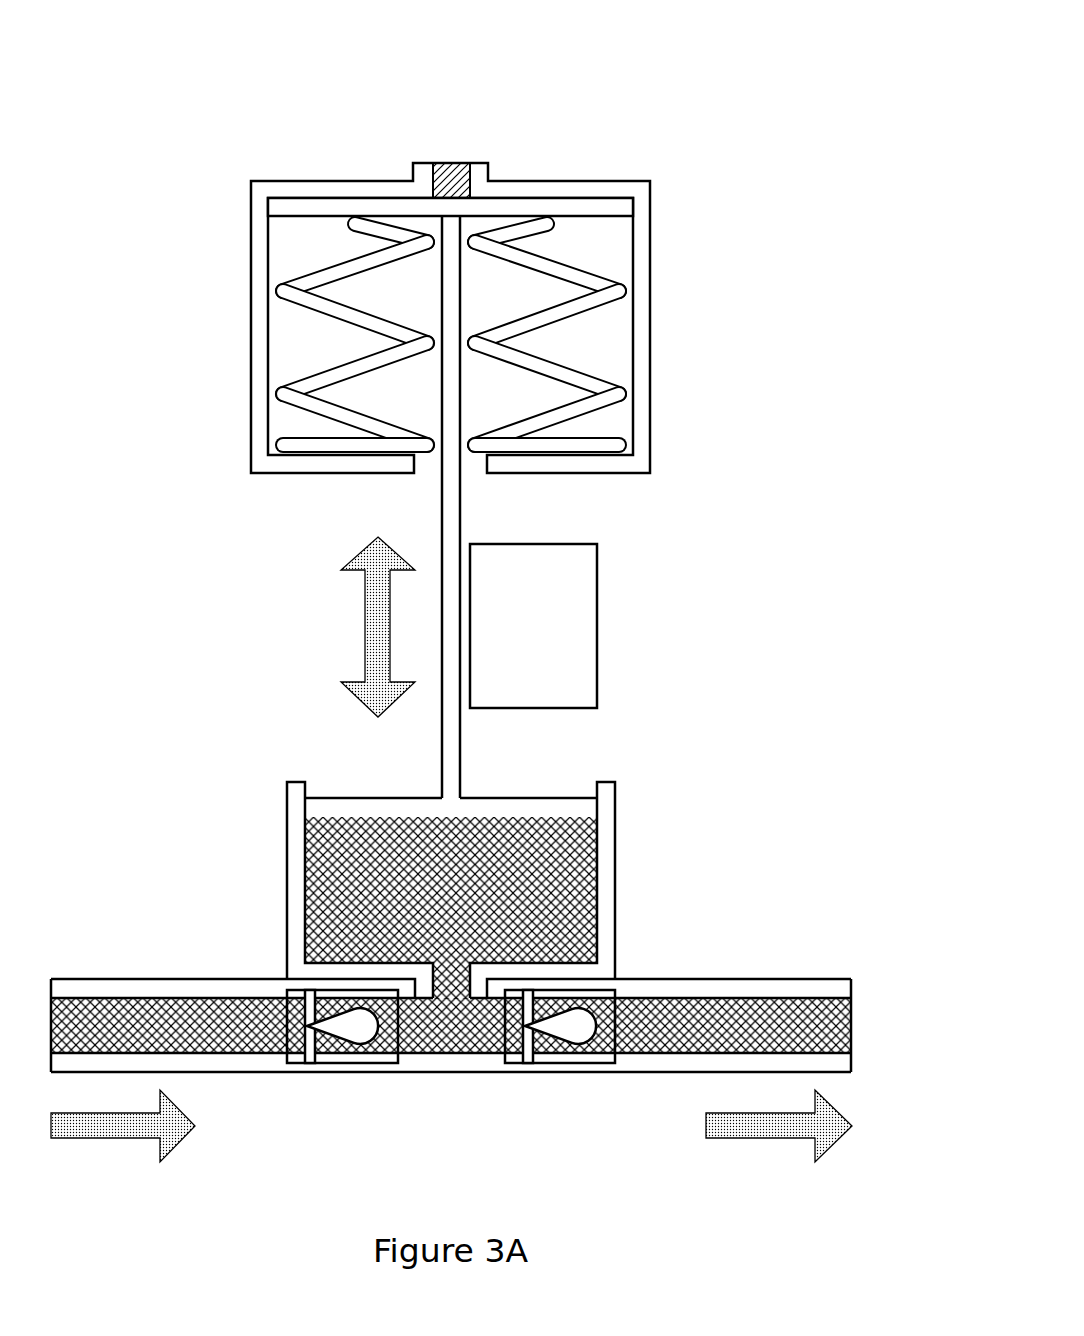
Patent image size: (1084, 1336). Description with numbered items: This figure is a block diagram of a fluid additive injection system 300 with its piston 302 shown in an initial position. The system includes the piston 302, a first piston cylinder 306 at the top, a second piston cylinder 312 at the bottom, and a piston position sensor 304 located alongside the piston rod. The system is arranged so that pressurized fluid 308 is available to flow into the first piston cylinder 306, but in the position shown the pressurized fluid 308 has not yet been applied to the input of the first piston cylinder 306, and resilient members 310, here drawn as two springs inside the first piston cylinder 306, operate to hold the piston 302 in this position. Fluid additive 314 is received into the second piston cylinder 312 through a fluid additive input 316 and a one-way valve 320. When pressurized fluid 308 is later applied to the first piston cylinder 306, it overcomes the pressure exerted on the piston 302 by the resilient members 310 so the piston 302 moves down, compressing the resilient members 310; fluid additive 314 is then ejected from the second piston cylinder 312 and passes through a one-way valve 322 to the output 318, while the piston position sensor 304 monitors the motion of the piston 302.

The fluid additive injection system 300 is at (644, 80).
The piston 302 is at (325, 798).
The piston position sensor 304 is at (551, 696).
The first piston cylinder 306 is at (642, 180).
The pressurized fluid 308 is at (455, 148).
The resilient members 310 is at (288, 387).
The second piston cylinder 312 is at (615, 780).
The fluid additive 314 is at (578, 914).
The fluid additive input 316 is at (68, 980).
The output 318 is at (797, 980).
The one-way valve 320 is at (342, 1063).
The one-way valve 322 is at (558, 1063).